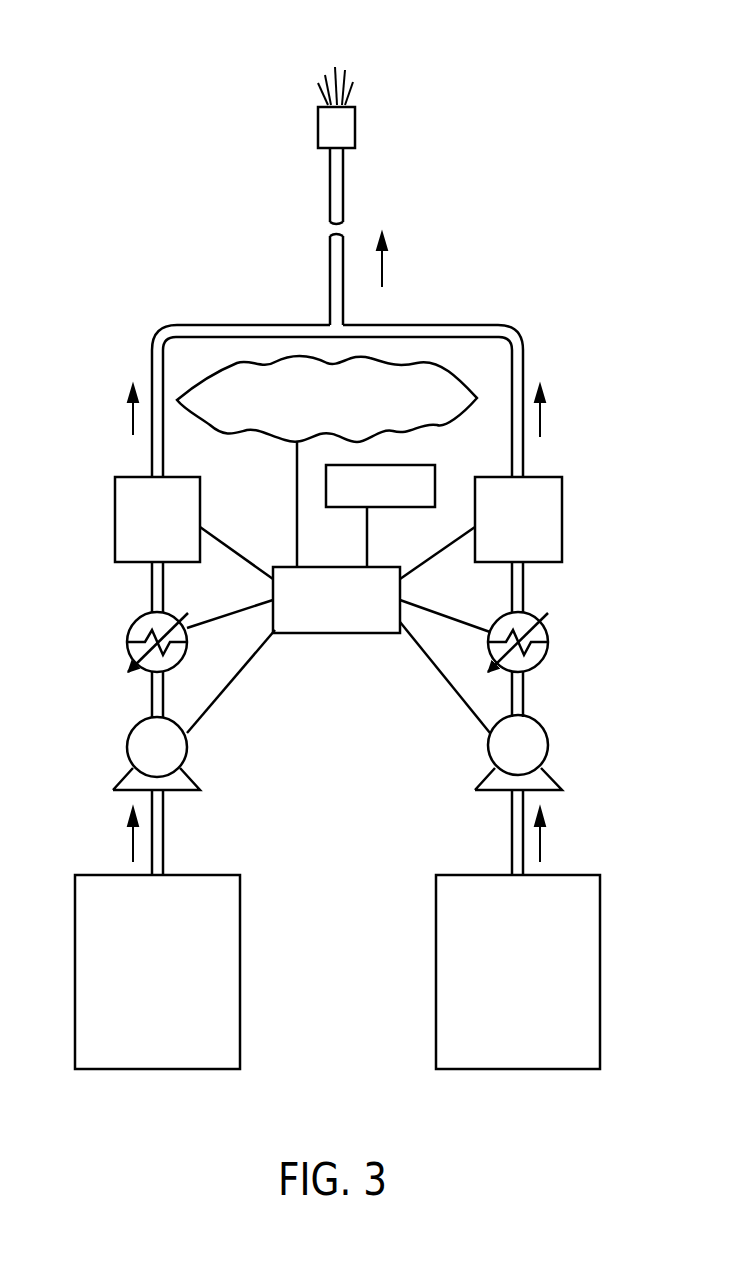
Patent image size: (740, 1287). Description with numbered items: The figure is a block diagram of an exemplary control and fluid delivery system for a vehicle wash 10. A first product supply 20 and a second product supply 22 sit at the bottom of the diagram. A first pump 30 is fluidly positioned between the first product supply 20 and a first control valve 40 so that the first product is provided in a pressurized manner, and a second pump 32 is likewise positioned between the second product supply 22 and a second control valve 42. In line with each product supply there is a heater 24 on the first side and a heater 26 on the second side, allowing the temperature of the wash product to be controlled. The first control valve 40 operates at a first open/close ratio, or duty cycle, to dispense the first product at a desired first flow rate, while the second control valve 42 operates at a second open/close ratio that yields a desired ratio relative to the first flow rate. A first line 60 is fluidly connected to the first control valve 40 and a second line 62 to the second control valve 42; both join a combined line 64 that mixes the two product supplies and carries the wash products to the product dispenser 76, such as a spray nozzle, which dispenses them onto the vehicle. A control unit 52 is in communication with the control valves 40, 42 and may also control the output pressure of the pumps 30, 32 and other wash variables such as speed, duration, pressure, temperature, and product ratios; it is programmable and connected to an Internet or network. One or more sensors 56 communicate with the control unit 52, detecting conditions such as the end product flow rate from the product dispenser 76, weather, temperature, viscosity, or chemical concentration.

The vehicle wash 10 is at (447, 147).
The product dispenser 76 is at (318, 130).
The combined line 64 is at (330, 287).
The first line 60 is at (158, 452).
The second line 62 is at (525, 463).
The first control valve 40 is at (115, 522).
The second control valve 42 is at (562, 505).
The sensors 56 is at (415, 465).
The control unit 52 is at (340, 633).
The heater 24 is at (133, 630).
The heater 26 is at (548, 662).
The first pump 30 is at (133, 730).
The second pump 32 is at (542, 735).
The first product supply 20 is at (118, 875).
The second product supply 22 is at (477, 875).